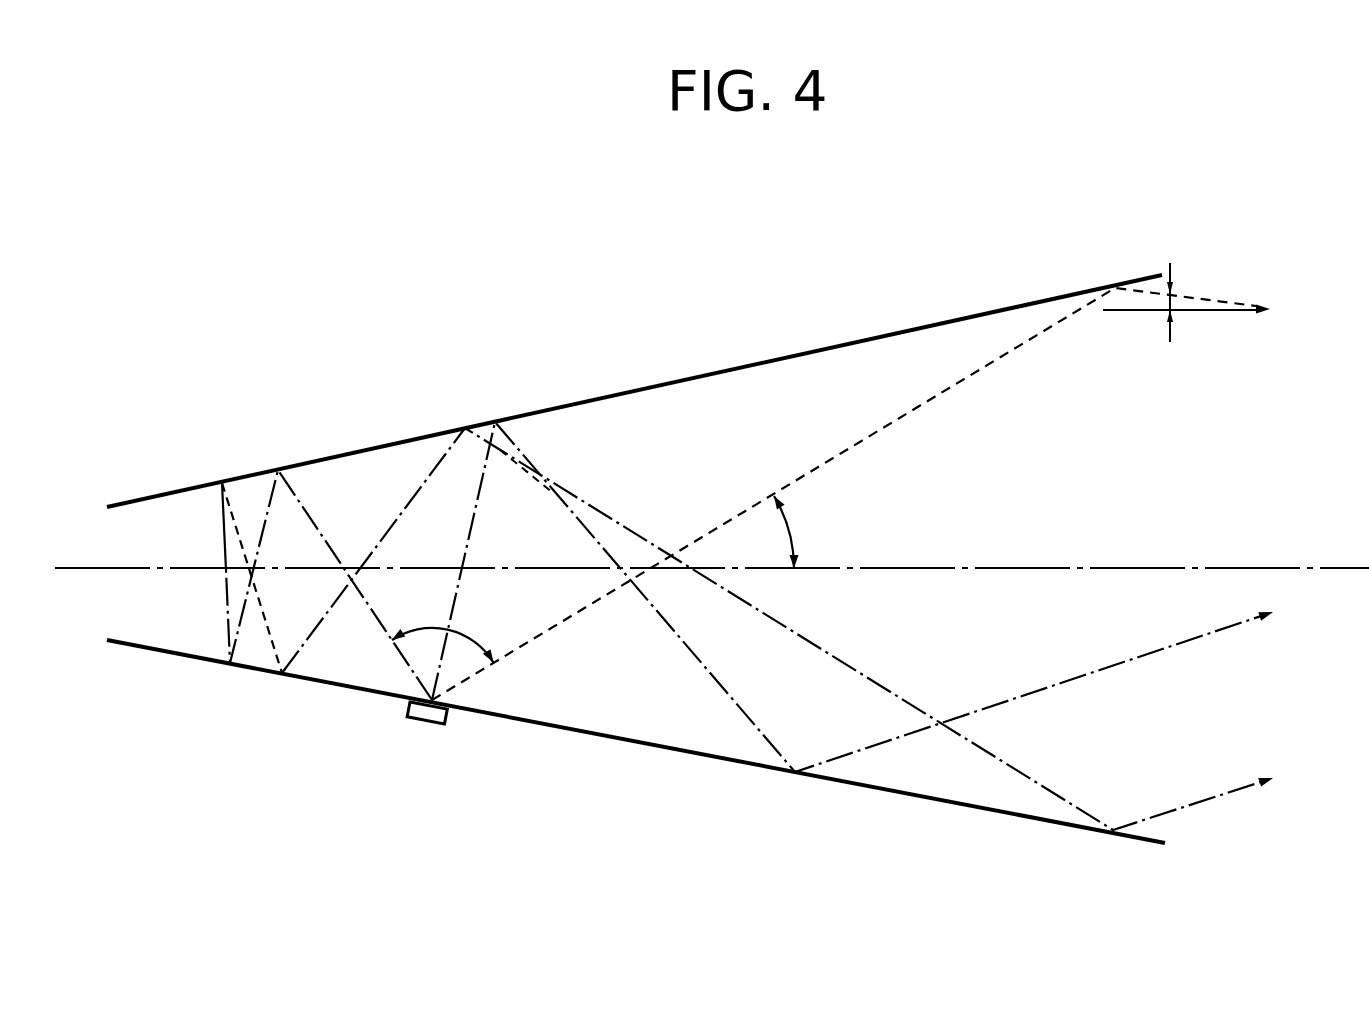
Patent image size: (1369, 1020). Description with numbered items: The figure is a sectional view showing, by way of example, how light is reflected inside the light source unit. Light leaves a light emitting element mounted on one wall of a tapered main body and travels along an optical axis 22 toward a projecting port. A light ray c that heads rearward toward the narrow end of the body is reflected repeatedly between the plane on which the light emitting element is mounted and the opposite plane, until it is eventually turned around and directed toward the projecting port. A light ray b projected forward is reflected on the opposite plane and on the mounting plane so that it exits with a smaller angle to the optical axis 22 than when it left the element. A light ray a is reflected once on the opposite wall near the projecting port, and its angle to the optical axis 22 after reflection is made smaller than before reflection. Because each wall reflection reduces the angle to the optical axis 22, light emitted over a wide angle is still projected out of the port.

The optical axis 22 is at (1215, 567).
The light ray a is at (943, 390).
The light ray b is at (467, 543).
The light ray c is at (295, 535).